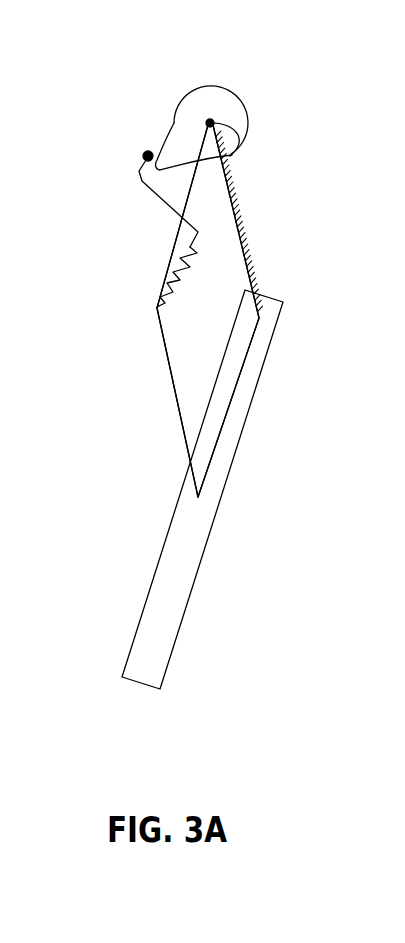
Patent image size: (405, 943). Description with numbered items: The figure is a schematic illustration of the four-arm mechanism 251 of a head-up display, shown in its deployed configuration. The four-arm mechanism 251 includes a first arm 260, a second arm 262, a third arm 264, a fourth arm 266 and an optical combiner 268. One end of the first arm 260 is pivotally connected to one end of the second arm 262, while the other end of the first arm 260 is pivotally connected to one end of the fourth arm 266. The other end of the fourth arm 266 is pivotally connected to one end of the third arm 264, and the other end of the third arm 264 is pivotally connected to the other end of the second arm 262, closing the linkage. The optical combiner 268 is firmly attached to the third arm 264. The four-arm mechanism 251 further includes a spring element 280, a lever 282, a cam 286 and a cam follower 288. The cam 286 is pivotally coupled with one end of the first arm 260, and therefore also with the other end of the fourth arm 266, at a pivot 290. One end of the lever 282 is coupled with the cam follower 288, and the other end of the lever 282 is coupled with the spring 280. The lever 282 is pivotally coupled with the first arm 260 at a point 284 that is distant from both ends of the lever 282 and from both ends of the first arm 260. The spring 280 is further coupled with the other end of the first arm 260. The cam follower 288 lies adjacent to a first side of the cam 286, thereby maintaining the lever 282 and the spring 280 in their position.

The four-arm mechanism 251 is at (179, 45).
The cam 286 is at (244, 106).
The pivot 290 is at (245, 143).
The cam follower 288 is at (143, 153).
The lever 282 is at (147, 186).
The point 284 is at (182, 220).
The first arm 260 is at (170, 257).
The spring element 280 is at (190, 266).
The fourth arm 266 is at (233, 200).
The second arm 262 is at (169, 365).
The third arm 264 is at (247, 353).
The optical combiner 268 is at (199, 570).